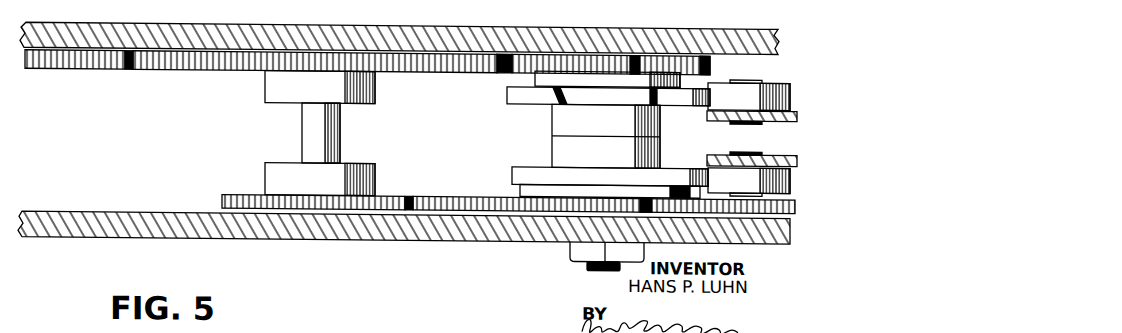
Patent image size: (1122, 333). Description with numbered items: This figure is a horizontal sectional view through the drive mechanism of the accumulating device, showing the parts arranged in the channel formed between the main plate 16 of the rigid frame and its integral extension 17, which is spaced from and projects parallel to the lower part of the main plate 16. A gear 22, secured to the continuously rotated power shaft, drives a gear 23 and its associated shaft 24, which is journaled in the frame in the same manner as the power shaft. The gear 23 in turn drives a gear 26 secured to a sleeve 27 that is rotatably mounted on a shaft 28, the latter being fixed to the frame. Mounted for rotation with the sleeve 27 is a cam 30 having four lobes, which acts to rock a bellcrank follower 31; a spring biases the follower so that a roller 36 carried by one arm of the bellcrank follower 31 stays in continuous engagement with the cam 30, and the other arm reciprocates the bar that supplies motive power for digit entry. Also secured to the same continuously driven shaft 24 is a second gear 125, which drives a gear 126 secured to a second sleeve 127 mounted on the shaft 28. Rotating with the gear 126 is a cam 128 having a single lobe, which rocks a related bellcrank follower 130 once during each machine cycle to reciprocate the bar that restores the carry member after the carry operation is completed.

The main plate 16 is at (333, 22).
The integral extension 17 is at (100, 211).
The gear 22 is at (92, 70).
The gear 23 is at (206, 69).
The shaft 24 is at (340, 142).
The gear 26 is at (711, 59).
The sleeve 27 is at (535, 74).
The shaft 28 is at (648, 48).
The cam 30 is at (508, 89).
The bellcrank follower 31 is at (764, 115).
The roller 36 is at (768, 76).
The second gear 125 is at (235, 193).
The gear 126 is at (432, 193).
The second sleeve 127 is at (662, 154).
The cam 128 is at (512, 168).
The bellcrank follower 130 is at (724, 148).